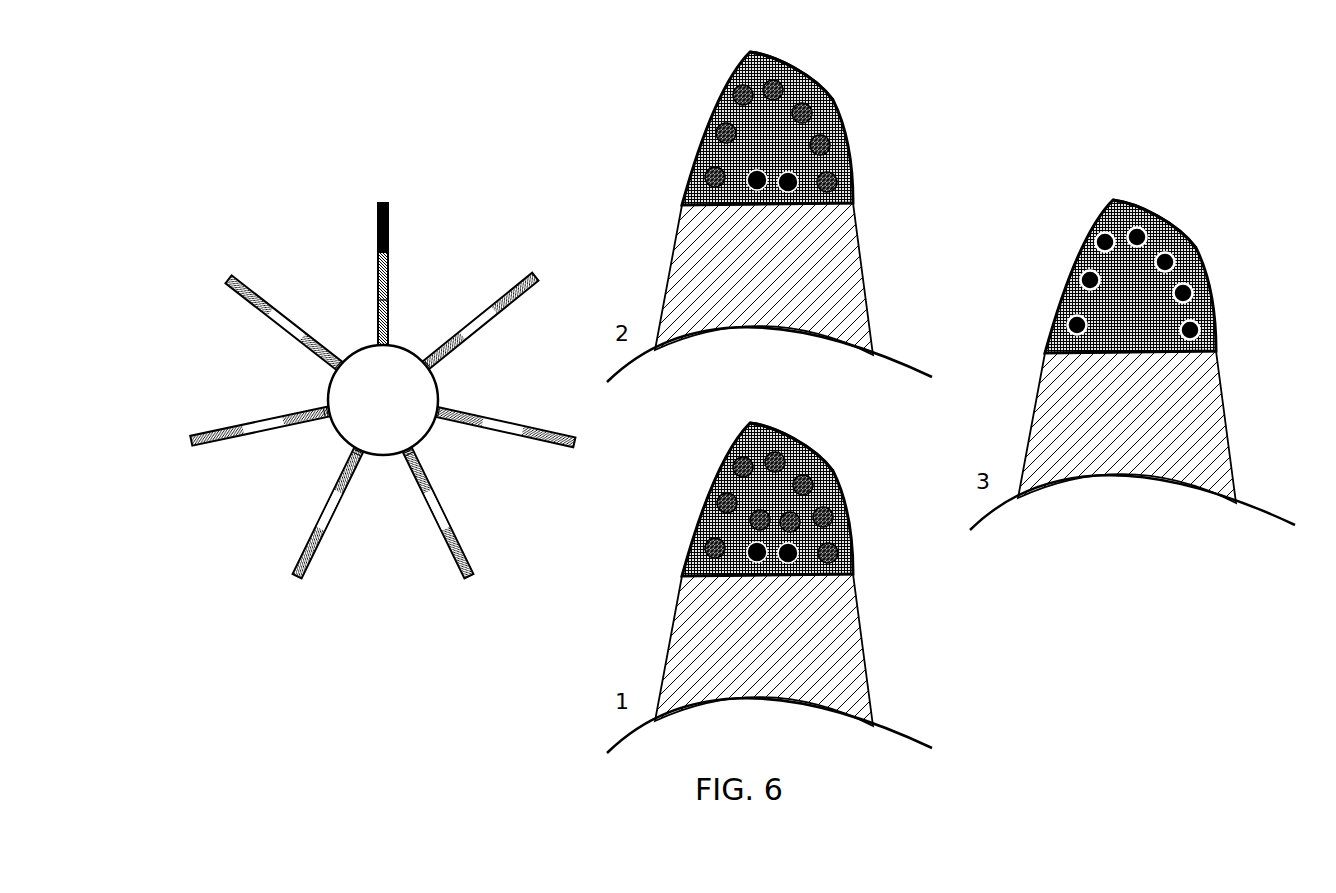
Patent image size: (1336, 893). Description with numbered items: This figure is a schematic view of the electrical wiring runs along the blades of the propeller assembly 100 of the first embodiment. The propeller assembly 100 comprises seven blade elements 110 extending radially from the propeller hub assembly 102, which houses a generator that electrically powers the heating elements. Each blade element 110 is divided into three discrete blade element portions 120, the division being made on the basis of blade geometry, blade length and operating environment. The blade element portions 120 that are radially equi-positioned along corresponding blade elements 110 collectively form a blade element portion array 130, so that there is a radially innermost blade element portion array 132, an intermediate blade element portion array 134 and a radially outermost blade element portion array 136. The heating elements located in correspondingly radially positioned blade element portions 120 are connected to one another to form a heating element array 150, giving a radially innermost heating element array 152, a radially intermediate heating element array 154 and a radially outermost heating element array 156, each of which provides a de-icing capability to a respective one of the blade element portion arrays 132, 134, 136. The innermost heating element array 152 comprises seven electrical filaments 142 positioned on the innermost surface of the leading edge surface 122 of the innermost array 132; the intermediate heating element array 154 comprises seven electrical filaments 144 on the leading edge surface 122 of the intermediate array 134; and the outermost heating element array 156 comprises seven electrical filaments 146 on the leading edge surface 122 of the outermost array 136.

The propeller assembly 100 is at (266, 160).
The propeller hub assembly 102 is at (383, 400).
The blade element 110 is at (228, 276).
The blade element portion 120 is at (263, 438).
The leading edge surface 122 is at (803, 72).
The blade element portion array 130 is at (388, 308).
The radially innermost blade element portion array 132 is at (803, 447).
The intermediate blade element portion array 134 is at (777, 53).
The radially outermost blade element portion array 136 is at (1167, 222).
The electrical filament 142 is at (853, 547).
The electrical filament 144 is at (843, 130).
The electrical filament 146 is at (792, 193).
The heating element array 150 is at (378, 312).
The radially innermost heating element array 152 is at (328, 395).
The radially intermediate heating element array 154 is at (318, 525).
The radially outermost heating element array 156 is at (295, 578).